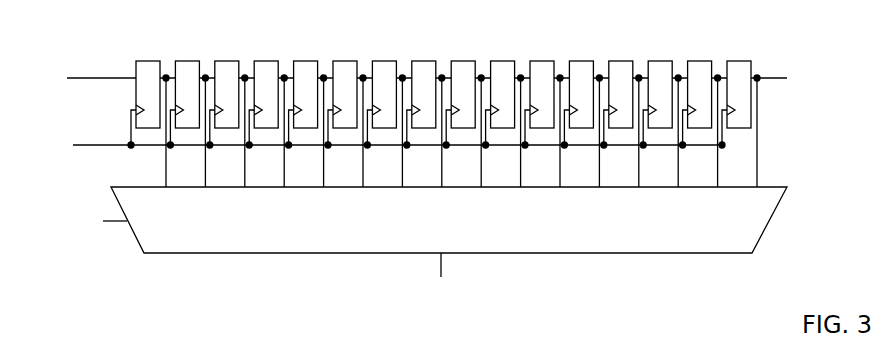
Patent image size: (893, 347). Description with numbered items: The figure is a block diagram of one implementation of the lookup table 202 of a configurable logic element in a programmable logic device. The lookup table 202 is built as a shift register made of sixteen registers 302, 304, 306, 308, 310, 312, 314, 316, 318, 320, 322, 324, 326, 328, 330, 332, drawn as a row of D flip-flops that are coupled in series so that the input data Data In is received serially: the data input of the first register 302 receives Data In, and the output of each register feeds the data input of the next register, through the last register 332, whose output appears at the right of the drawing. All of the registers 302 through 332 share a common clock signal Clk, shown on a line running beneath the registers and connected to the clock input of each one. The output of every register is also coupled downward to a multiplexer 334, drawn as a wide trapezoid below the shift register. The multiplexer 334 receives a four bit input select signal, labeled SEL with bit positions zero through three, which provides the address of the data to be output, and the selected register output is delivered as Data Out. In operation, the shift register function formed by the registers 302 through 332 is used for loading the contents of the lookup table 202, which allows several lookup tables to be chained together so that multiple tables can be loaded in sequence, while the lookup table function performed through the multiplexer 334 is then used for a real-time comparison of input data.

The lookup table 202 is at (431, 166).
The register 302 is at (150, 61).
The register 304 is at (189, 61).
The register 306 is at (229, 61).
The register 308 is at (268, 61).
The register 310 is at (308, 61).
The register 312 is at (347, 61).
The register 314 is at (386, 61).
The register 316 is at (426, 61).
The register 318 is at (465, 61).
The register 320 is at (505, 61).
The register 322 is at (544, 61).
The register 324 is at (583, 61).
The register 326 is at (623, 61).
The register 328 is at (662, 61).
The register 330 is at (702, 61).
The register 332 is at (741, 61).
The multiplexer 334 is at (782, 185).